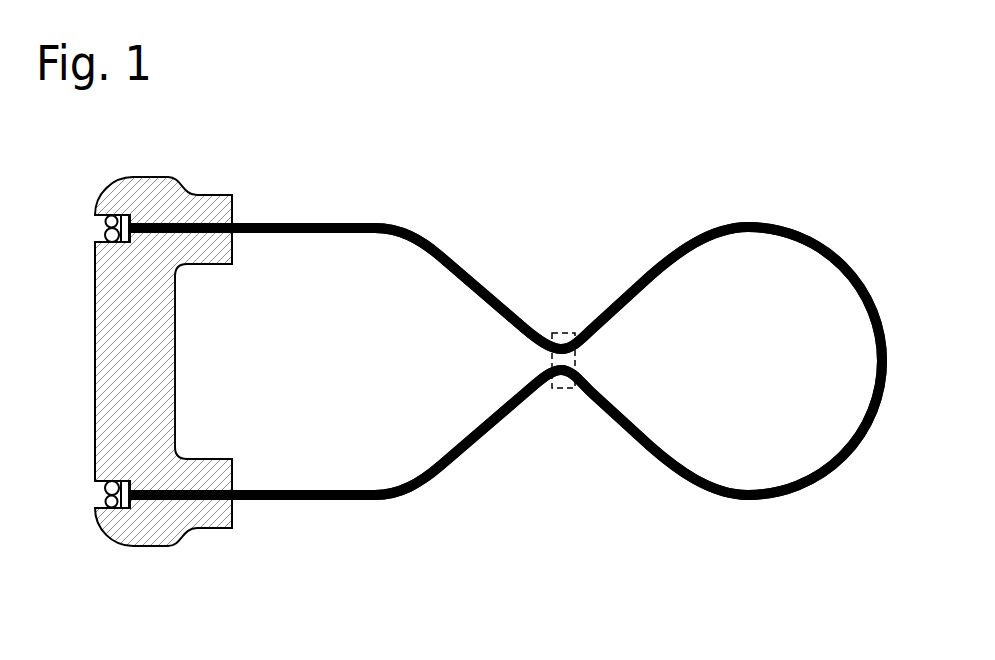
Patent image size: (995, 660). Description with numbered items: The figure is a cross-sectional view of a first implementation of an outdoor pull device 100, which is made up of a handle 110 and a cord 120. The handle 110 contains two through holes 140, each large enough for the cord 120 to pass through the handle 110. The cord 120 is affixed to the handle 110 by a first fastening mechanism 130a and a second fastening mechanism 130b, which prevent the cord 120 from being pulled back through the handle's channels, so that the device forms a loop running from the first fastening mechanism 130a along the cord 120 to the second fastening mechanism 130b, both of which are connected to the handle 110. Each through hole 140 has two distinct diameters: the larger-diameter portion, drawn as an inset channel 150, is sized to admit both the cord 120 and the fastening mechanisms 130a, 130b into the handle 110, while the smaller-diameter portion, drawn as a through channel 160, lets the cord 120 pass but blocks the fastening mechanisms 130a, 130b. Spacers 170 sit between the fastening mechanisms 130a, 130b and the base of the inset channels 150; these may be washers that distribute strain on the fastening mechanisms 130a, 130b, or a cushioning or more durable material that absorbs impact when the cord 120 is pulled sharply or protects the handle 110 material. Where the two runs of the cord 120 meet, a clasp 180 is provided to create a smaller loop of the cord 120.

The outdoor pull device 100 is at (447, 391).
The handle 110 is at (91, 380).
The cord 120 is at (364, 235).
The first fastening mechanism 130a is at (104, 217).
The second fastening mechanism 130b is at (104, 485).
The through hole 140 is at (233, 447).
The inset channel 150 is at (133, 477).
The through channel 160 is at (233, 482).
The spacer 170 is at (123, 213).
The clasp 180 is at (563, 389).